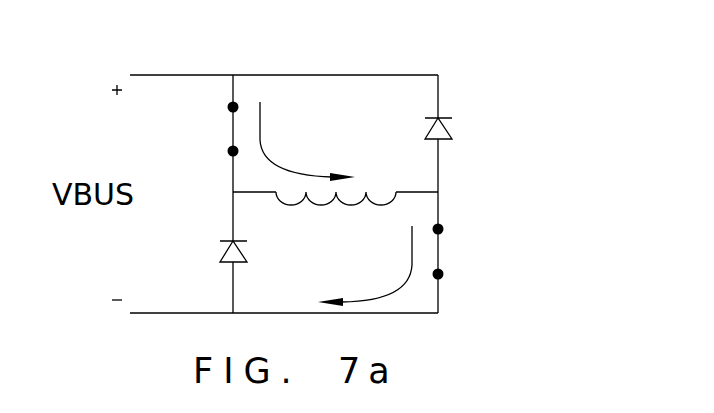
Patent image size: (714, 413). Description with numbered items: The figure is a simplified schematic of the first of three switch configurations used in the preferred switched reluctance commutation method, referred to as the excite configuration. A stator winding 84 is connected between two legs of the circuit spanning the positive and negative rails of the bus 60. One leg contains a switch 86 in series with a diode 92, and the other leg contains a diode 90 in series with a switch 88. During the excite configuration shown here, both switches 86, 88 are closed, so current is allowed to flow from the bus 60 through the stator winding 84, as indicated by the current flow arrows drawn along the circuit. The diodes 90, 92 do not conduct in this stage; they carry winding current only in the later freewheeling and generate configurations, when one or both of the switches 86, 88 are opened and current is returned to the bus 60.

The bus 60 is at (151, 75).
The stator winding 84 is at (382, 205).
The switch 86 is at (233, 135).
The switch 88 is at (440, 252).
The diode 90 is at (447, 126).
The diode 92 is at (222, 246).